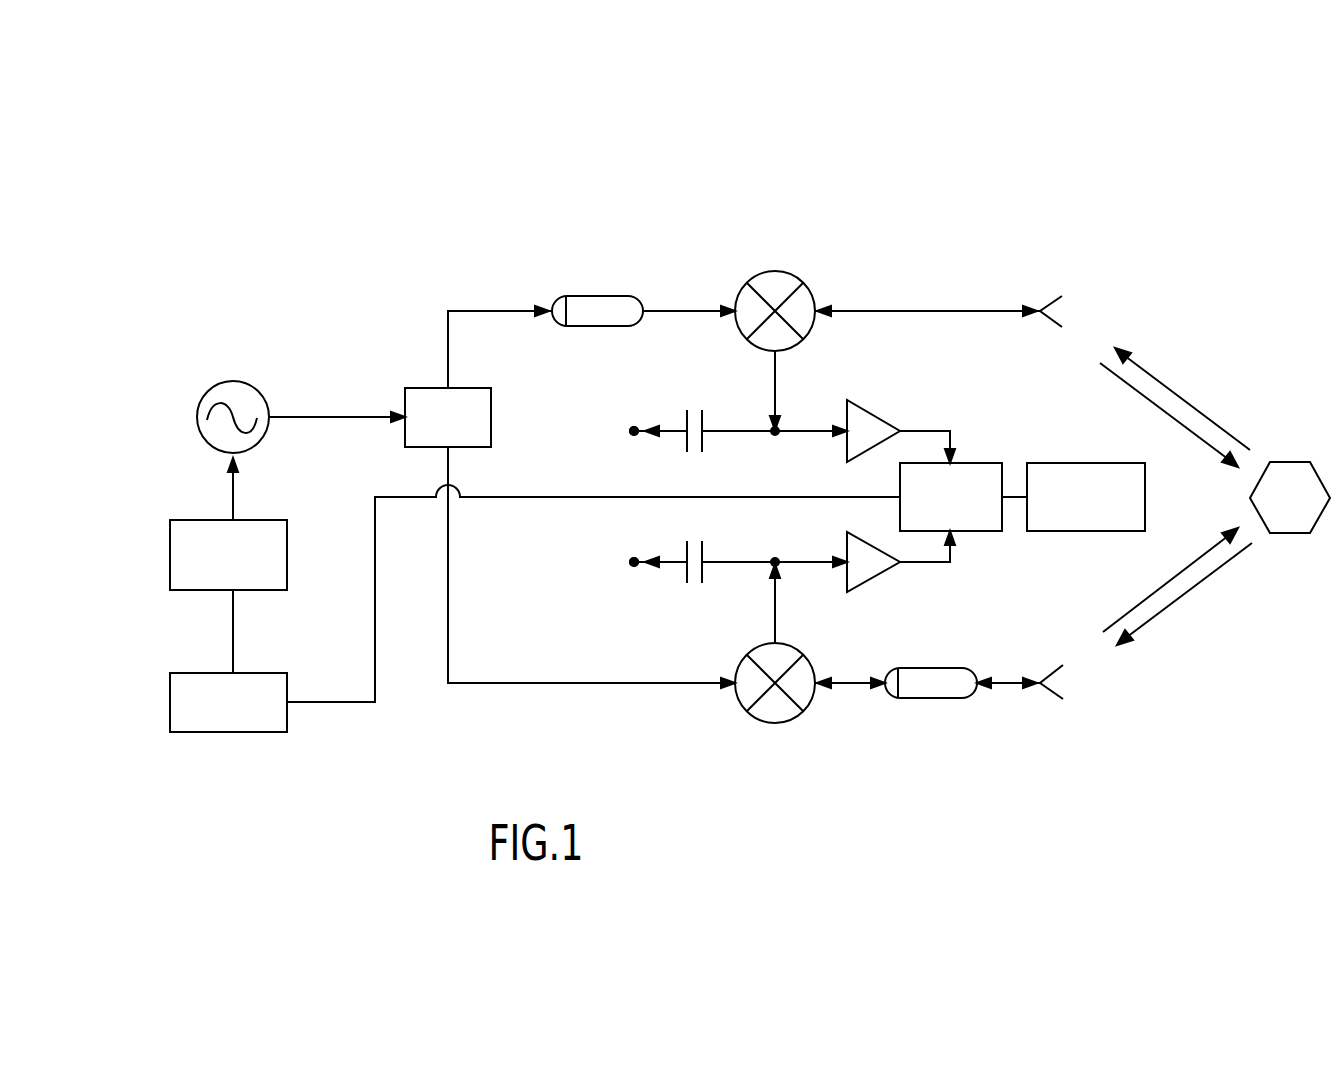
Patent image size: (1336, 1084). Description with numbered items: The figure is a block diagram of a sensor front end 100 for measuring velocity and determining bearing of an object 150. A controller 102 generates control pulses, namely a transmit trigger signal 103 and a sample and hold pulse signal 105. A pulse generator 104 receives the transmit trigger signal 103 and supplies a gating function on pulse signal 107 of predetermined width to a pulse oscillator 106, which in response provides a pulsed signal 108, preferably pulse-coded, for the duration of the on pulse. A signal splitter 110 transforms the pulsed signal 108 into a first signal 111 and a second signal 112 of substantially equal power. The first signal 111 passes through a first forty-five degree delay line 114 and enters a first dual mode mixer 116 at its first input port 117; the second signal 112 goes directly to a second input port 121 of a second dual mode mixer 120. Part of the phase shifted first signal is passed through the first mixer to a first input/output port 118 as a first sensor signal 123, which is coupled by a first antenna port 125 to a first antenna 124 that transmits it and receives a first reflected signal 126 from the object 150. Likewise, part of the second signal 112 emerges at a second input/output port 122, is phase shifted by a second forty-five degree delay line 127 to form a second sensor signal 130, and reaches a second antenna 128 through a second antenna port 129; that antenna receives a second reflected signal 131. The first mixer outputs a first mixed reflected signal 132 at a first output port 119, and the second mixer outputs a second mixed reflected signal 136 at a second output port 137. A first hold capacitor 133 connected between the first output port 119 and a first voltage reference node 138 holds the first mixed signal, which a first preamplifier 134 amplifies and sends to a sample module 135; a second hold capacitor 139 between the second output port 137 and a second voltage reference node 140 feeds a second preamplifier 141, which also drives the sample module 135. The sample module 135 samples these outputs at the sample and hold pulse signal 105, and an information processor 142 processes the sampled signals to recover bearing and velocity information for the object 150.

The sensor front end 100 is at (236, 224).
The controller 102 is at (228, 733).
The transmit trigger signal 103 is at (233, 626).
The pulse generator 104 is at (170, 556).
The sample and hold pulse signal 105 is at (350, 703).
The pulse oscillator 106 is at (205, 390).
The gating function on pulse signal 107 is at (230, 503).
The pulsed signal 108 is at (340, 417).
The signal splitter 110 is at (420, 388).
The first signal 111 is at (445, 311).
The second signal 112 is at (507, 683).
The first 45° delay line 114 is at (598, 297).
The first dual mode mixer 116 is at (778, 272).
The first input port 117 is at (735, 300).
The first input/output port 118 is at (818, 300).
The first output port 119 is at (772, 352).
The second dual mode mixer 120 is at (773, 725).
The second input port 121 is at (742, 703).
The second input/output port 122 is at (825, 702).
The first sensor signal 123 is at (917, 311).
The first antenna 124 is at (1052, 300).
The first antenna port 125 is at (1038, 308).
The first reflected signal 126 is at (1172, 392).
The second 45° delay line 127 is at (928, 697).
The second antenna 128 is at (1063, 700).
The second antenna port 129 is at (1040, 690).
The second sensor signal 130 is at (1165, 580).
The second reflected signal 131 is at (1190, 592).
The first mixed reflected signal 132 is at (778, 377).
The first hold capacitor 133 is at (686, 420).
The first preamplifier 134 is at (880, 412).
The sample module 135 is at (980, 463).
The second mixed reflected signal 136 is at (778, 615).
The second output port 137 is at (773, 636).
The first voltage reference node 138 is at (630, 432).
The second hold capacitor 139 is at (687, 552).
The second voltage reference node 140 is at (630, 563).
The second preamplifier 141 is at (877, 578).
The information processor 142 is at (1072, 532).
The object 150 is at (1288, 462).